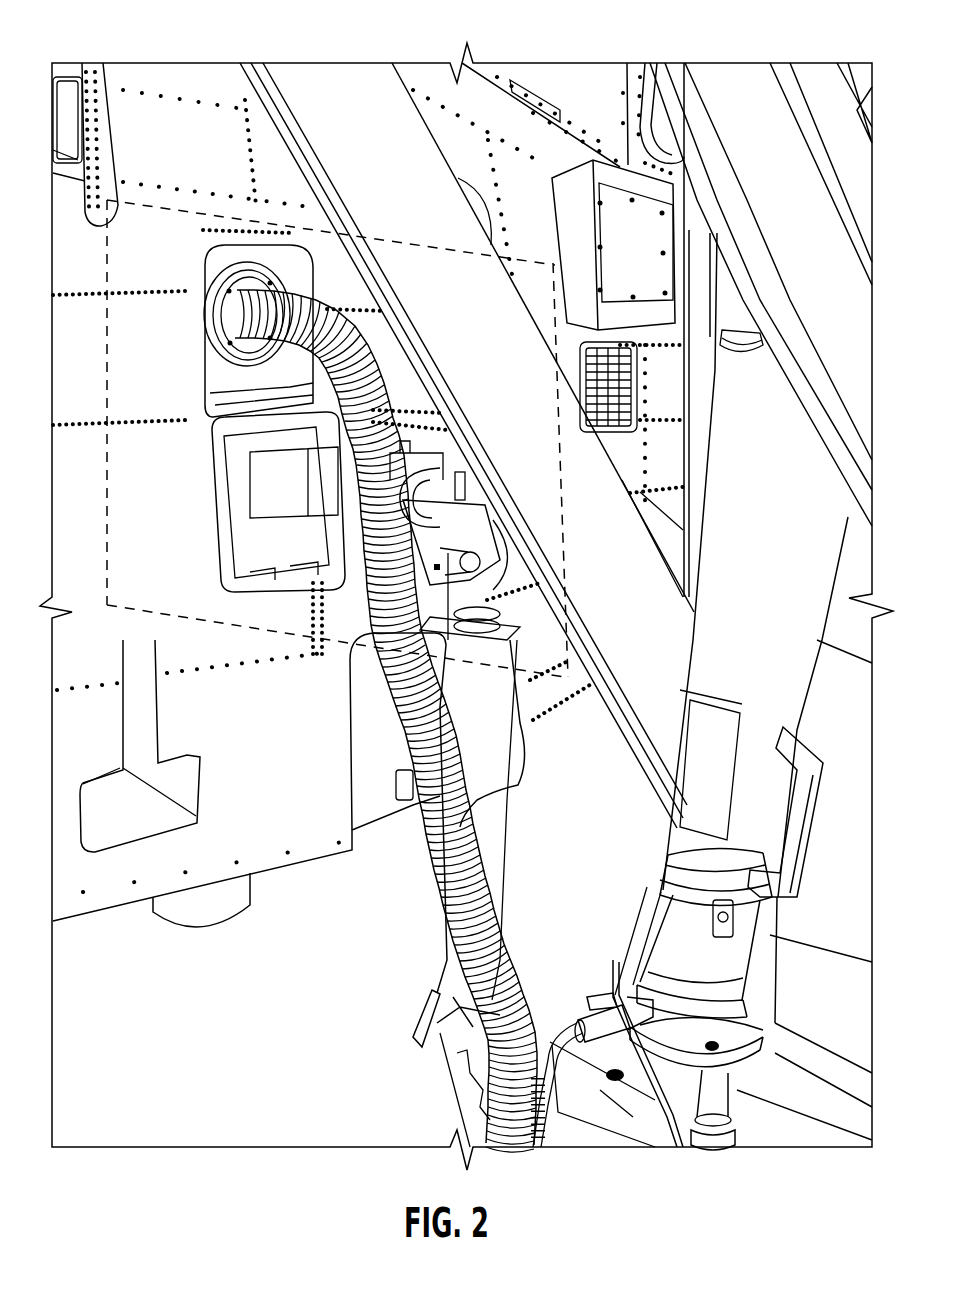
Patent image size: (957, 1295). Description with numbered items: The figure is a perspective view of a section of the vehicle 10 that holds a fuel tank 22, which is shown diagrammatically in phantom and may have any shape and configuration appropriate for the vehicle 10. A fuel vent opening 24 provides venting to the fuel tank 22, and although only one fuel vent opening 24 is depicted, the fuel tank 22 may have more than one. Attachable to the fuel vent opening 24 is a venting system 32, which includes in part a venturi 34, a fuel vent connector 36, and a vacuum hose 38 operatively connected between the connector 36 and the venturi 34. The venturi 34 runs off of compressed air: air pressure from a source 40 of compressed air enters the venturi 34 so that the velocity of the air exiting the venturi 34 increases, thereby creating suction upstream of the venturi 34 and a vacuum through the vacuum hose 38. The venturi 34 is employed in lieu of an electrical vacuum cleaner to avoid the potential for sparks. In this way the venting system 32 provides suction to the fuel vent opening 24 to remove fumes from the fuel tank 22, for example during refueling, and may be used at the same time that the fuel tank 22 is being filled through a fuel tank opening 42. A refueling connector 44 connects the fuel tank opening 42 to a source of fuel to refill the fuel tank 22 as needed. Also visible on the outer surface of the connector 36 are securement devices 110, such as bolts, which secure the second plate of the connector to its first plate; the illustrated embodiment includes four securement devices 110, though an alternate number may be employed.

The vehicle 10 is at (225, 82).
The fuel tank 22 is at (568, 677).
The fuel vent opening 24 is at (366, 245).
The venting system 32 is at (370, 995).
The venturi 34 is at (790, 693).
The fuel vent connector 36 is at (255, 283).
The vacuum hose 38 is at (441, 897).
The source of compressed air 40 is at (598, 1005).
The fuel tank opening 42 is at (426, 470).
The refueling connector 44 is at (467, 503).
The securement devices 110 is at (230, 292).